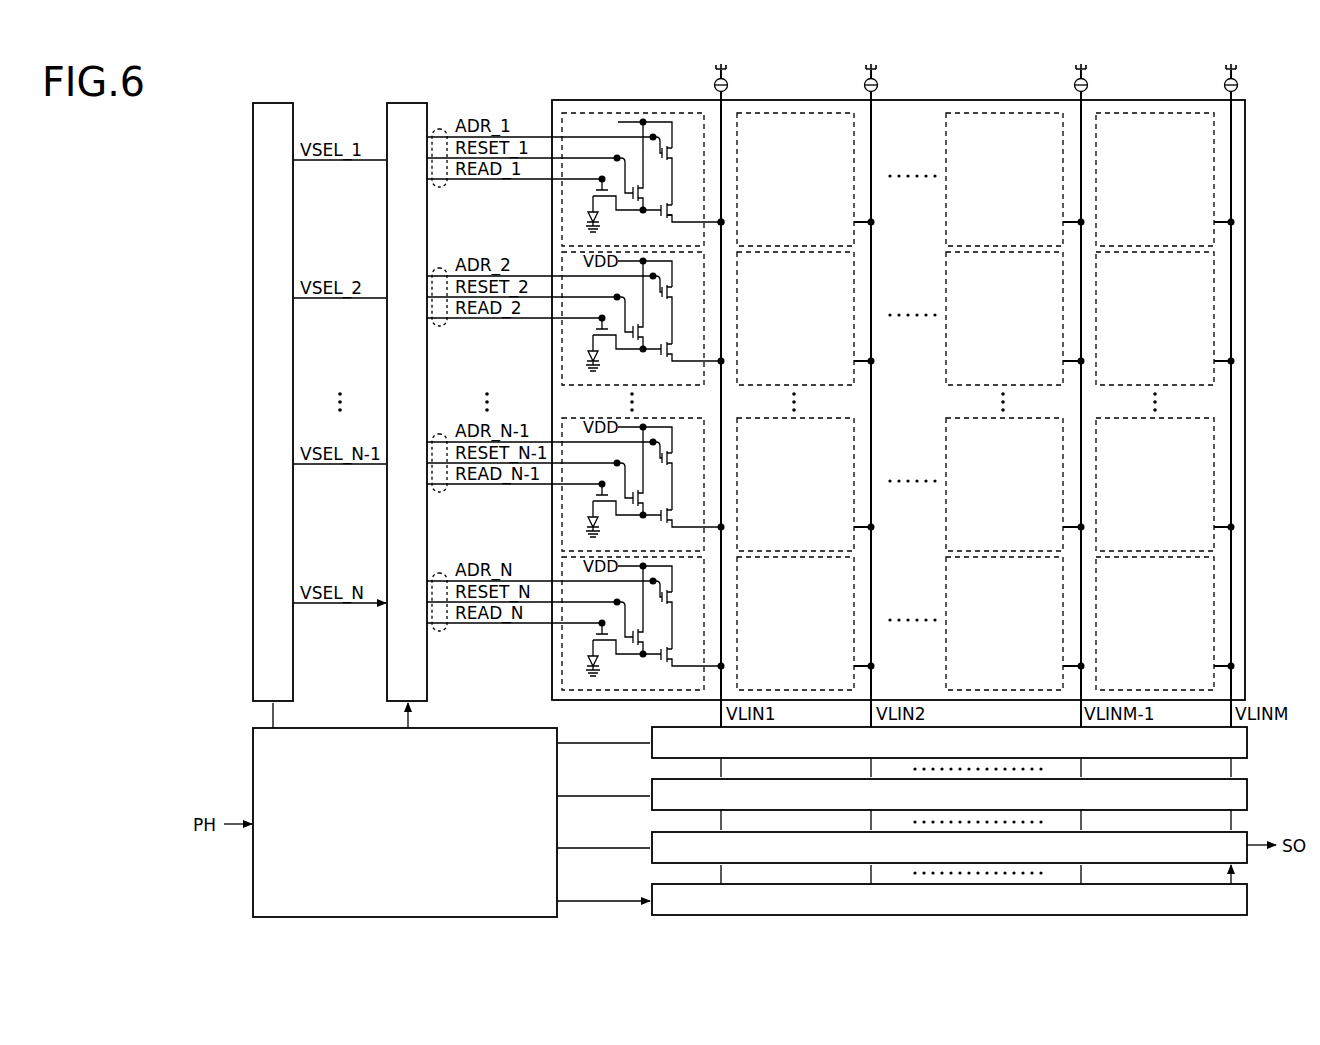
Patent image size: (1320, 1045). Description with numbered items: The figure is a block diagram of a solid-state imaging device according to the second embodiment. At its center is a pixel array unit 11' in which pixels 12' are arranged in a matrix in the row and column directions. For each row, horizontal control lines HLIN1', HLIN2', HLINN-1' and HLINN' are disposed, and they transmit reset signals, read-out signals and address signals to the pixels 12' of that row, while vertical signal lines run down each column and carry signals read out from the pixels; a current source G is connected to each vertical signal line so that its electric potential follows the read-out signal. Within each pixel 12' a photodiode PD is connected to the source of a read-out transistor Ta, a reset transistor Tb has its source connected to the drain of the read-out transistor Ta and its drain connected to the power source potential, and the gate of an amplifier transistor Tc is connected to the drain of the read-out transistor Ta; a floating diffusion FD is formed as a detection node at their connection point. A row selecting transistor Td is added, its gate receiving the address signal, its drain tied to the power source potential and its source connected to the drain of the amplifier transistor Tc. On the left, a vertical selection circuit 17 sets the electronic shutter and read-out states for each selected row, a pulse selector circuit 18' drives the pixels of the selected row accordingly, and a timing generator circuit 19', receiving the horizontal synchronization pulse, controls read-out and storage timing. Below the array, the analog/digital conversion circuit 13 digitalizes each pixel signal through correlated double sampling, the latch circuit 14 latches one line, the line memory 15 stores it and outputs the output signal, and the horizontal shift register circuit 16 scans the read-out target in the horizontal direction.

The vertical selection circuit 17 is at (264, 103).
The pulse selector circuit 18' is at (411, 392).
The timing generator circuit 19' is at (405, 812).
The pixel array unit 11' is at (898, 389).
The pixel 12' is at (643, 162).
The analog/digital conversion circuit 13 is at (1250, 743).
The latch circuit 14 is at (1250, 796).
The line memory 15 is at (1250, 838).
The horizontal shift register circuit 16 is at (1250, 901).
The current source G is at (1238, 86).
The read-out transistor Ta is at (595, 197).
The reset transistor Tb is at (643, 193).
The amplifier transistor Tc is at (672, 212).
The row selecting transistor Td is at (672, 153).
The photodiode PD is at (600, 226).
The floating diffusion FD is at (644, 214).
The horizontal control line HLIN1' is at (473, 172).
The horizontal control line HLIN2' is at (473, 311).
The horizontal control line HLINN-1' is at (483, 477).
The horizontal control line HLINN' is at (474, 616).